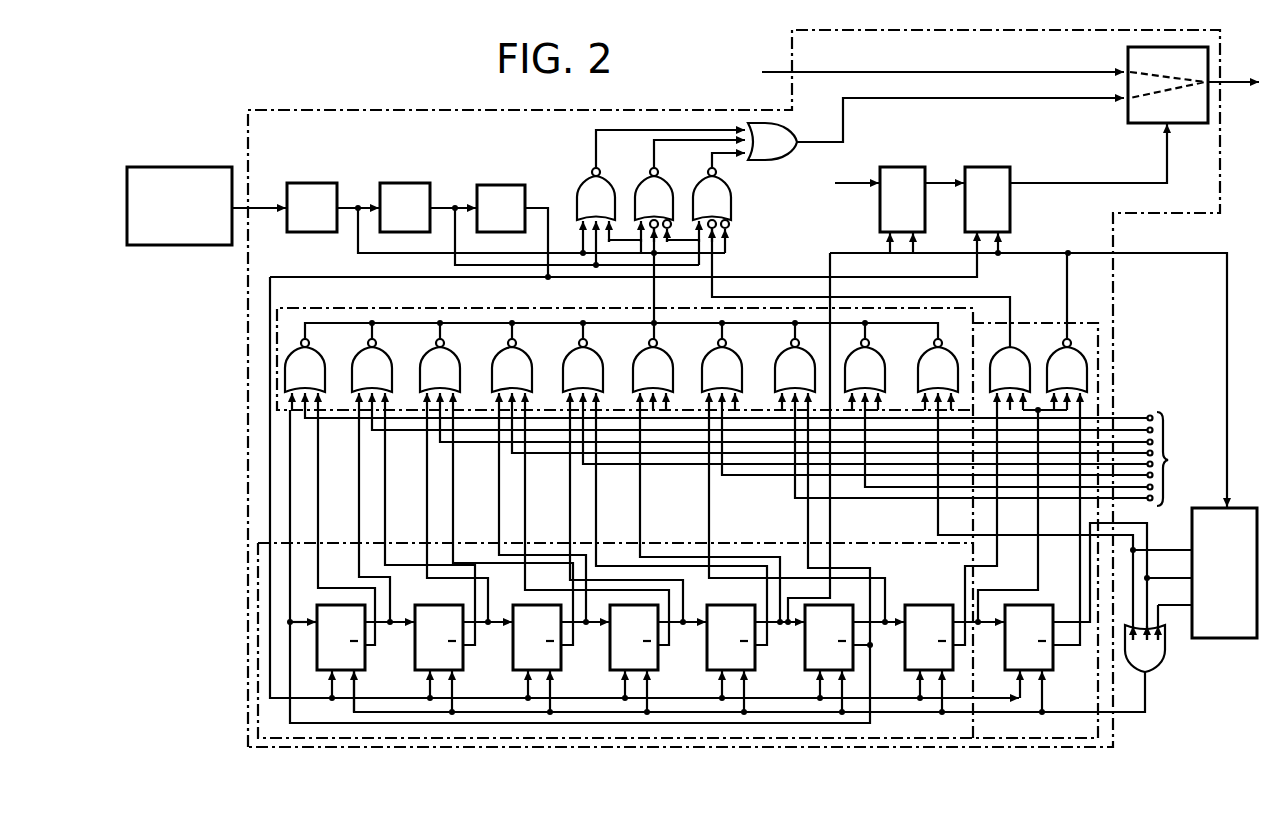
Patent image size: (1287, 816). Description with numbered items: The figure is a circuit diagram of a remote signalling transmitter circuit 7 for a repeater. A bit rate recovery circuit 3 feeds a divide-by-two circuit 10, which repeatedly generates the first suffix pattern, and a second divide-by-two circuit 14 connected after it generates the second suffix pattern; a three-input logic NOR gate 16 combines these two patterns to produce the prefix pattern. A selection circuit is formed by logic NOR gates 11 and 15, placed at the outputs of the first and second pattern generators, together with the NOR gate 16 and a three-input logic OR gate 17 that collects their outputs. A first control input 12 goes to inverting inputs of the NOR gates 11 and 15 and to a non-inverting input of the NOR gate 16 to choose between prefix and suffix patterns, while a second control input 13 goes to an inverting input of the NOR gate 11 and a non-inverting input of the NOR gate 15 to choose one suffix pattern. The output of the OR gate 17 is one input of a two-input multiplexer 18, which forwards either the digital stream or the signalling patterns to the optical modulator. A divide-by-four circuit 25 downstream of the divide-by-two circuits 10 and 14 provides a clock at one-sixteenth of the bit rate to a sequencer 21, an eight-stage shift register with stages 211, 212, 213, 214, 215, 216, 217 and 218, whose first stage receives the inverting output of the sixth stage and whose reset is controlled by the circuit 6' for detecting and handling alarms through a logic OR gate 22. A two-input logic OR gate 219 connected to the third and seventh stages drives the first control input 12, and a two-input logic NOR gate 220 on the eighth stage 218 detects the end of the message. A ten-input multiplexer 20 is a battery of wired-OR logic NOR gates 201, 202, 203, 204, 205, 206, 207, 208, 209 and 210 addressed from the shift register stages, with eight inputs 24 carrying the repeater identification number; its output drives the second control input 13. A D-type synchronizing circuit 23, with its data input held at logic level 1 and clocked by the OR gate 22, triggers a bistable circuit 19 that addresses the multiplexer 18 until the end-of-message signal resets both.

The logic level 1 data input 1 is at (848, 184).
The bit rate recovery circuit 3 is at (199, 167).
The circuit for detecting and handling alarms 6' is at (1222, 619).
The remote signalling transmitter circuit 7 is at (306, 106).
The divide-by-two circuit 10 is at (320, 183).
The logic NOR gate 11 is at (643, 186).
The first control input 12 is at (712, 266).
The second control input 13 is at (654, 297).
The divide-by-two circuit 14 is at (412, 183).
The logic NOR gate 15 is at (702, 186).
The logic NOR gate 16 is at (584, 186).
The logic OR gate 17 is at (780, 158).
The two-input multiplexer 18 is at (1207, 57).
The bistable circuit 19 is at (989, 167).
The ten-input multiplexer 20 is at (975, 310).
The sequencer 21 is at (1030, 325).
The logic OR gate 22 is at (1157, 667).
The synchronizing circuit 23 is at (905, 167).
The eight inputs 24 is at (749, 458).
The divide-by-four circuit 25 is at (512, 185).
The logic NOR gate 201 is at (518, 372).
The logic NOR gate 202 is at (659, 372).
The logic NOR gate 203 is at (786, 372).
The logic NOR gate 204 is at (311, 372).
The logic NOR gate 205 is at (378, 372).
The logic NOR gate 206 is at (446, 372).
The logic NOR gate 207 is at (589, 372).
The logic NOR gate 208 is at (728, 372).
The logic NOR gate 209 is at (871, 372).
The logic NOR gate 210 is at (929, 372).
The shift register stage 211 is at (360, 671).
The shift register stage 212 is at (458, 671).
The shift register stage 213 is at (556, 671).
The shift register stage 214 is at (653, 671).
The shift register stage 215 is at (750, 671).
The shift register stage 216 is at (848, 671).
The shift register stage 217 is at (950, 671).
The shift register stage 218 is at (1050, 671).
The logic OR gate 219 is at (1017, 372).
The logic NOR gate 220 is at (1075, 372).